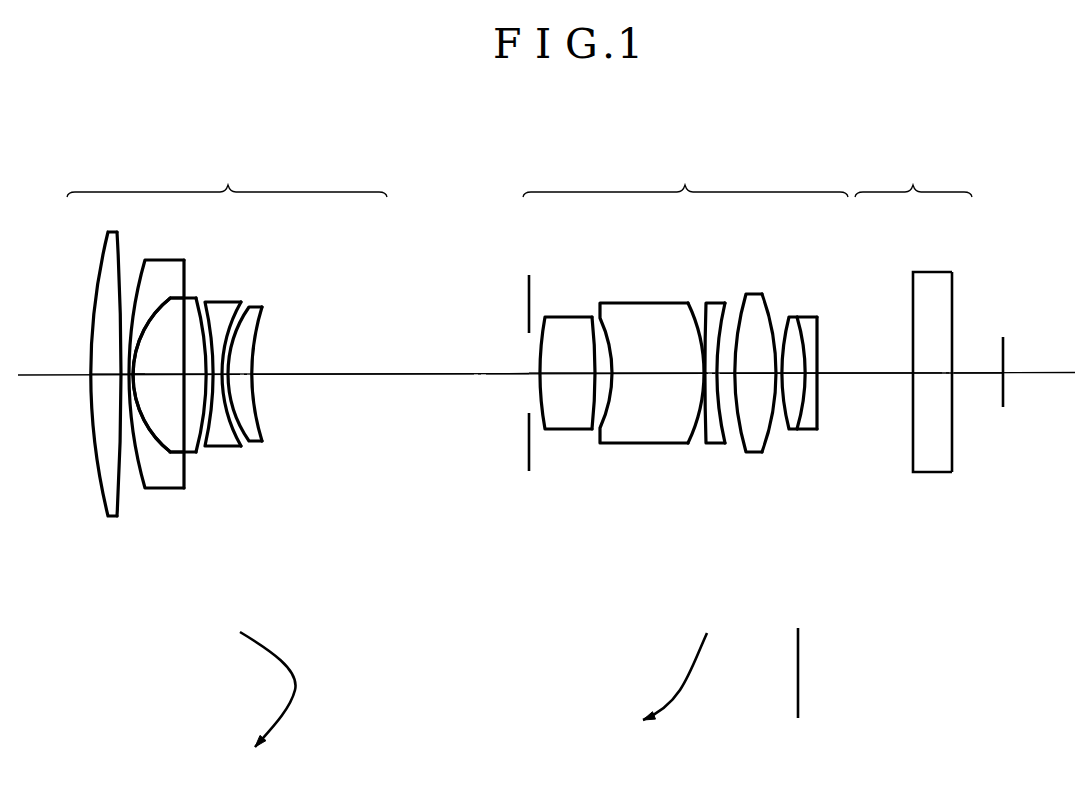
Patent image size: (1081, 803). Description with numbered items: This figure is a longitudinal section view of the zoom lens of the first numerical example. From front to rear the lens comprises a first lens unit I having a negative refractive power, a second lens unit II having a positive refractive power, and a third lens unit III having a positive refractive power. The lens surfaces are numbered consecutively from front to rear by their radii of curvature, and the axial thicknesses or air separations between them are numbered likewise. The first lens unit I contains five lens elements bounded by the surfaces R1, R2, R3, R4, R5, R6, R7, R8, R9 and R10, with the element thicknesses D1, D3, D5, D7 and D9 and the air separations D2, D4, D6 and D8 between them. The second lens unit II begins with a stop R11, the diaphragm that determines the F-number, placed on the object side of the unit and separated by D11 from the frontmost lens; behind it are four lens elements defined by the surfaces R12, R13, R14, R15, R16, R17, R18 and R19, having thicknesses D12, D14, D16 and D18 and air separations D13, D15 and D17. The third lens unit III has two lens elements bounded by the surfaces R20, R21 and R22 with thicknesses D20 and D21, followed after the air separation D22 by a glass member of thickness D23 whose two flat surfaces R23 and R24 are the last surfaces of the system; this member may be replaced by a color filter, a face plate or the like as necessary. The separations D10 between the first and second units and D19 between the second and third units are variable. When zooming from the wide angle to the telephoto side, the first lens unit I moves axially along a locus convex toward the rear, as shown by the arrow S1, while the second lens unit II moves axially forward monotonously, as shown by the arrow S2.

The first lens unit I is at (227, 177).
The second lens unit II is at (685, 177).
The third lens unit III is at (913, 177).
The radius of curvature R1 is at (99, 272).
The radius of curvature R2 is at (120, 270).
The radius of curvature R3 is at (143, 270).
The radius of curvature R4 is at (172, 300).
The radius of curvature R5 is at (194, 300).
The radius of curvature R6 is at (203, 330).
The radius of curvature R7 is at (208, 310).
The radius of curvature R8 is at (240, 310).
The radius of curvature R9 is at (250, 313).
The radius of curvature R10 is at (261, 332).
The stop R11 is at (524, 292).
The radius of curvature R12 is at (544, 318).
The radius of curvature R13 is at (590, 330).
The radius of curvature R14 is at (612, 305).
The radius of curvature R15 is at (676, 305).
The radius of curvature R16 is at (702, 304).
The radius of curvature R17 is at (722, 304).
The radius of curvature R18 is at (751, 296).
The radius of curvature R19 is at (767, 315).
The radius of curvature R20 is at (784, 322).
The radius of curvature R21 is at (800, 330).
The radius of curvature R22 is at (818, 343).
The radius of curvature R23 is at (914, 297).
The radius of curvature R24 is at (952, 297).
The axial thickness D1 is at (100, 372).
The air separation D2 is at (127, 372).
The axial thickness D3 is at (139, 372).
The air separation D4 is at (158, 372).
The axial thickness D5 is at (192, 372).
The air separation D6 is at (209, 372).
The axial thickness D7 is at (217, 372).
The air separation D8 is at (225, 372).
The axial thickness D9 is at (241, 372).
The variable air separation D10 is at (407, 373).
The air separation D11 is at (536, 370).
The axial thickness D12 is at (568, 370).
The air separation D13 is at (600, 370).
The axial thickness D14 is at (660, 370).
The air separation D15 is at (702, 370).
The axial thickness D16 is at (712, 370).
The air separation D17 is at (727, 370).
The axial thickness D18 is at (755, 370).
The variable air separation D19 is at (778, 370).
The axial thickness D20 is at (800, 372).
The axial thickness D21 is at (882, 372).
The air separation D22 is at (930, 372).
The axial thickness D23 is at (957, 372).
The arrow S1 is at (272, 689).
The arrow S2 is at (675, 676).